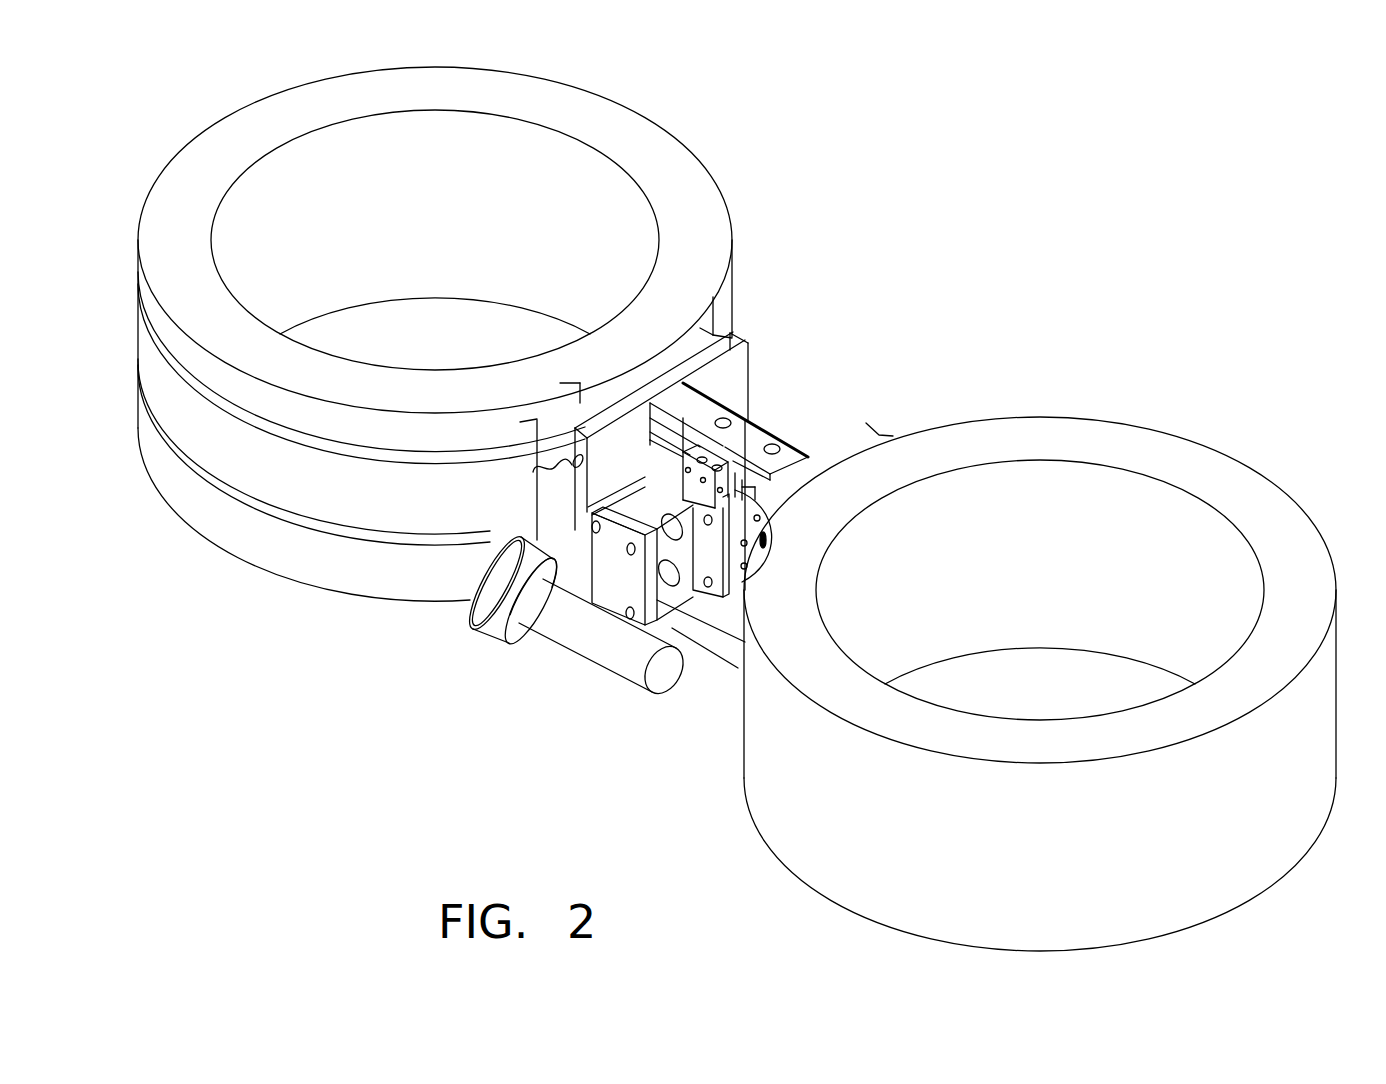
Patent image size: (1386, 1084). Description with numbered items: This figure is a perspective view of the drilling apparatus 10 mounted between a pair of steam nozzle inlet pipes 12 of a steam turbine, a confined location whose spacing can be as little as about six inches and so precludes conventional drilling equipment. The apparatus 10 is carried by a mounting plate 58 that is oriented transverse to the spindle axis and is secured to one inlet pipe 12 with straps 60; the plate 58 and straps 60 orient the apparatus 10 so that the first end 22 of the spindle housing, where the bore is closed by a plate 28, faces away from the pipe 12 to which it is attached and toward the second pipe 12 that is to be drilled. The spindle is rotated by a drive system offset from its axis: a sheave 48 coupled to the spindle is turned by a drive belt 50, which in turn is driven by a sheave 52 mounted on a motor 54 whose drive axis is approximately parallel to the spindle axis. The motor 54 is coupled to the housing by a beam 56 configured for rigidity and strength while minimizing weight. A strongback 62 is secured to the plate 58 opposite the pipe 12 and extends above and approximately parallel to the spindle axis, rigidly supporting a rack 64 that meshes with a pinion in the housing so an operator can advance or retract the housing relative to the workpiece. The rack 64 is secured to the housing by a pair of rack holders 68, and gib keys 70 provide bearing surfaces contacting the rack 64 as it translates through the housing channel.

The drilling apparatus 10 is at (990, 205).
The steam nozzle inlet pipe 12 is at (671, 176).
The first end 22 is at (738, 588).
The plate 28 is at (743, 555).
The sheave 48 is at (602, 428).
The drive belt 50 is at (471, 580).
The sheave 52 is at (506, 628).
The motor 54 is at (613, 658).
The beam 56 is at (660, 484).
The mounting plate 58 is at (728, 378).
The straps 60 is at (372, 452).
The strongback 62 is at (678, 398).
The rack 64 is at (653, 433).
The rack holders 68 is at (712, 455).
The gib keys 70 is at (793, 459).